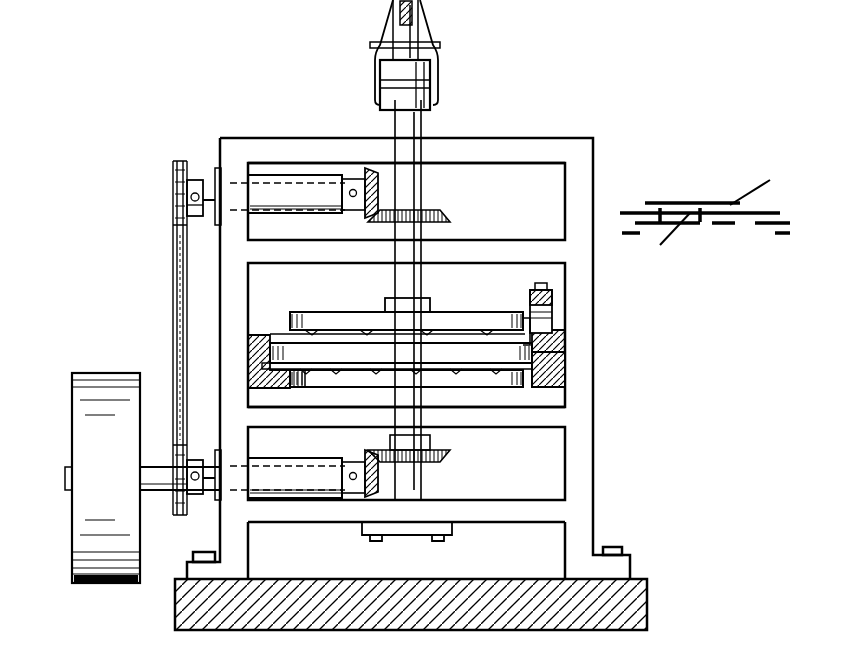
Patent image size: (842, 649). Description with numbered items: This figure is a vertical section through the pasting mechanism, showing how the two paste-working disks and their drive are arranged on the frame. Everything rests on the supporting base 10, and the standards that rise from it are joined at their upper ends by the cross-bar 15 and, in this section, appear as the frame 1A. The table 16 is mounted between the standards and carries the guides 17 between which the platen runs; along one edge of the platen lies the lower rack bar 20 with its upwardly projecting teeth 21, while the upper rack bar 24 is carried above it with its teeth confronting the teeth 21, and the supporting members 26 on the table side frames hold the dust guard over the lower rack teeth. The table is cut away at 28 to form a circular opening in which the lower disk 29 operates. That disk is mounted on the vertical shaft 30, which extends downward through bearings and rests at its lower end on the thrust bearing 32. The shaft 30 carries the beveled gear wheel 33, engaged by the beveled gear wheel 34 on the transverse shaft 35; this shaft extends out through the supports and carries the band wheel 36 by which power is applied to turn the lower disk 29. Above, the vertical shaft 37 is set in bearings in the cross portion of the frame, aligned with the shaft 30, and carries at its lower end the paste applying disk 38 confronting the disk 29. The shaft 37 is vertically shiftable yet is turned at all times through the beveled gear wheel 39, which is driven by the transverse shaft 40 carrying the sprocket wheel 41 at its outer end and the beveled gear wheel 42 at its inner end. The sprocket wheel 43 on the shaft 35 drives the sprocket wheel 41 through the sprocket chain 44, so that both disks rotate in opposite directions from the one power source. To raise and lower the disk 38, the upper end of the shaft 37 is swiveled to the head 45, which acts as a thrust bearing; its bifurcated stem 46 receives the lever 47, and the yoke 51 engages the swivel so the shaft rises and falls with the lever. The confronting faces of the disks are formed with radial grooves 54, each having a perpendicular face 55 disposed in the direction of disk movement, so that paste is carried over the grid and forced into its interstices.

The supporting base 10 is at (640, 607).
The frame 1A is at (585, 158).
The cross-bar 15 is at (507, 140).
The table 16 is at (538, 390).
The guides 17 is at (256, 348).
The lower rack bar 20 is at (567, 355).
The upwardly projecting teeth 21 is at (530, 348).
The upper rack bar 24 is at (556, 296).
The supporting members 26 is at (553, 313).
The cut-away portion 28 is at (296, 392).
The lower disk 29 is at (476, 390).
The vertical shaft 30 is at (426, 482).
The thrust bearing 32 is at (406, 536).
The beveled gear wheel 33 is at (372, 448).
The beveled gear wheel 34 is at (372, 495).
The transverse shaft 35 is at (66, 488).
The band wheel 36 is at (84, 371).
The vertical shaft 37 is at (396, 277).
The paste applying disk 38 is at (465, 312).
The beveled gear wheel 39 is at (446, 214).
The transverse shaft 40 is at (210, 190).
The sprocket wheel 41 is at (185, 197).
The beveled gear wheel 42 is at (372, 168).
The sprocket wheel 43 is at (182, 497).
The sprocket chain 44 is at (174, 265).
The head 45 is at (433, 69).
The stem 46 is at (398, 50).
The lever 47 is at (413, 12).
The yoke 51 is at (378, 30).
The radial grooves 54 is at (448, 357).
The perpendicular face 55 is at (362, 327).